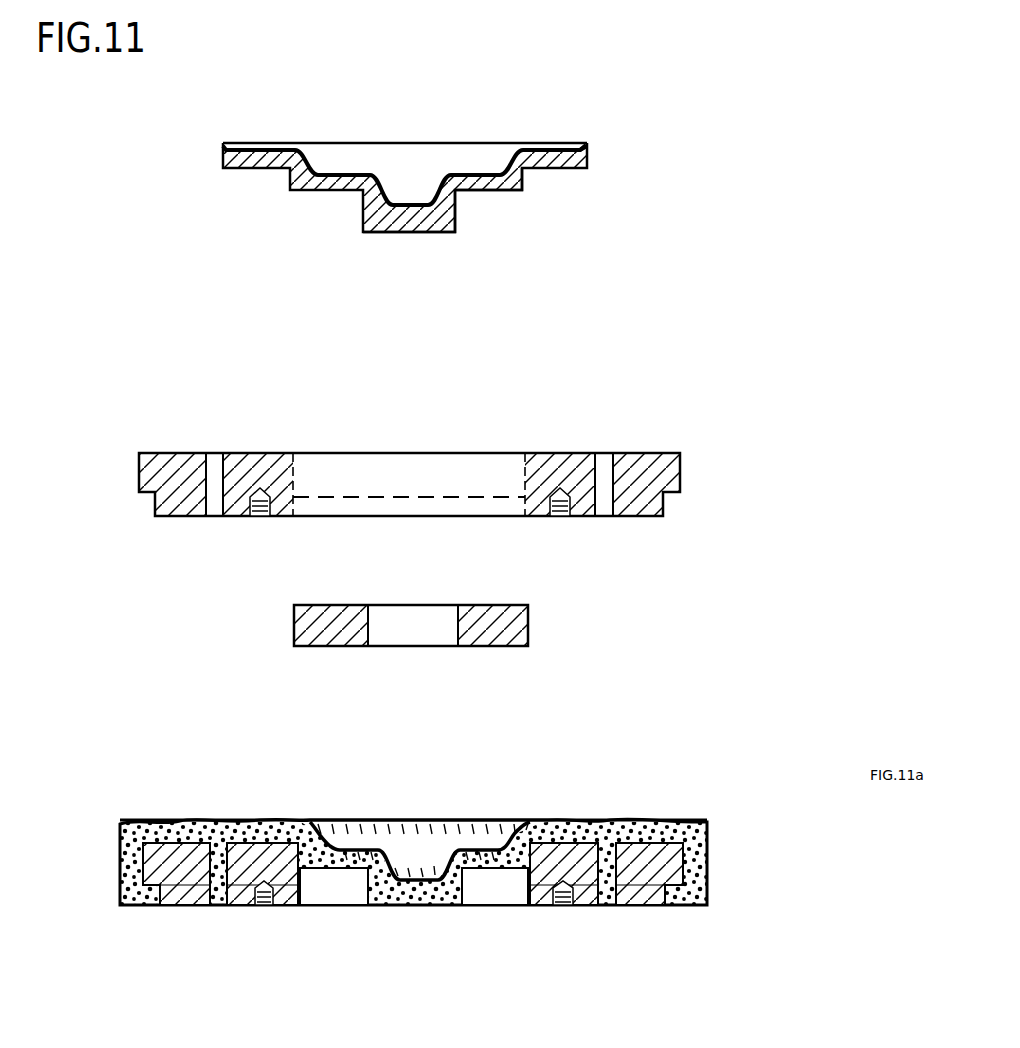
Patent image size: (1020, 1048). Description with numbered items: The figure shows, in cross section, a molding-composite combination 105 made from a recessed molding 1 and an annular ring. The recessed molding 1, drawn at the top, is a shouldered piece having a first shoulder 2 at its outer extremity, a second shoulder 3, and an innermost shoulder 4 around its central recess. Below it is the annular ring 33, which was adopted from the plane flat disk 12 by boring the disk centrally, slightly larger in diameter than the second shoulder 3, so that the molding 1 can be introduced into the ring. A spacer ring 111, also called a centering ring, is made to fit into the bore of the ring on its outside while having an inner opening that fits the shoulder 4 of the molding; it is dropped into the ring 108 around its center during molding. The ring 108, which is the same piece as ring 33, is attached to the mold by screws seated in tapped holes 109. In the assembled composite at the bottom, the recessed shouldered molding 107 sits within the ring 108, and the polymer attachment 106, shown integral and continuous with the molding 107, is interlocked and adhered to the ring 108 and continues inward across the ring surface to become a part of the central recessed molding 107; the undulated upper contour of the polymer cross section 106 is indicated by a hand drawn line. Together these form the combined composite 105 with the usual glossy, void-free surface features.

In FIG. 11, the recessed molding 1 is at (465, 140).
In FIG. 11, the shoulder 2 is at (593, 158).
In FIG. 11, the second shoulder 3 is at (535, 178).
In FIG. 11, the shoulder 4 is at (465, 198).
In FIG. 11, the molding 107 is at (405, 212).
In FIG. 11a, the molding 107 is at (472, 817).
In FIG. 11, the annular ring 33 is at (238, 443).
In FIG. 11, the disk 12 is at (365, 433).
In FIG. 11, the ring 108 is at (365, 461).
In FIG. 11a, the ring 108 is at (187, 908).
In FIG. 11, the spacer ring 111 is at (540, 623).
In FIG. 11a, the polymer attachment 106 is at (257, 817).
In FIG. 11a, the molding-composite combination 105 is at (435, 856).
In FIG. 11a, the tapped holes 109 is at (267, 910).